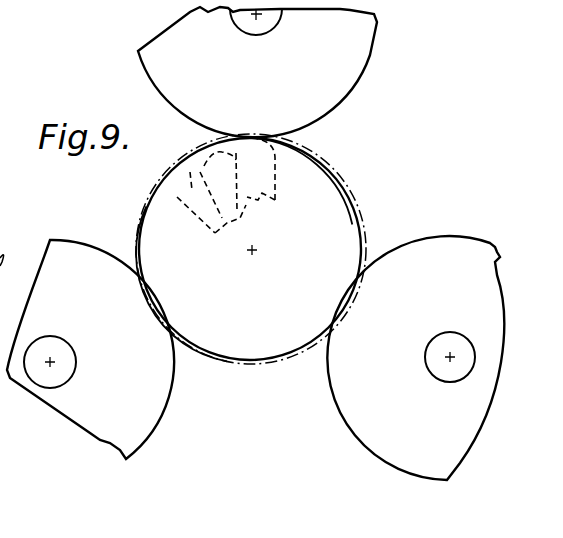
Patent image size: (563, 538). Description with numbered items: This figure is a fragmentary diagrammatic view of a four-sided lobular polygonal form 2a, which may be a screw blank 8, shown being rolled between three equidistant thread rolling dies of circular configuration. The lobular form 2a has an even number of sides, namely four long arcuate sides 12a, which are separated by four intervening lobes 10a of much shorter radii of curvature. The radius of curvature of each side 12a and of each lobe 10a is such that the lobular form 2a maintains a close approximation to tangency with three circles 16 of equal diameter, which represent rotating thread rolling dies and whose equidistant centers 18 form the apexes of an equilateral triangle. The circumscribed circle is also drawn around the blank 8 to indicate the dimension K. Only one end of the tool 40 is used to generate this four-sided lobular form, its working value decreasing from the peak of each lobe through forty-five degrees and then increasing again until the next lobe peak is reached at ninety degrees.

The workpiece 8 is at (254, 256).
The circle 16 is at (370, 63).
The center 18 is at (257, 16).
The lobe 10a is at (252, 136).
The side 12a is at (163, 205).
The tool 40 is at (246, 205).
The lobular polygonal form 2a is at (312, 333).
The dimension K is at (300, 196).